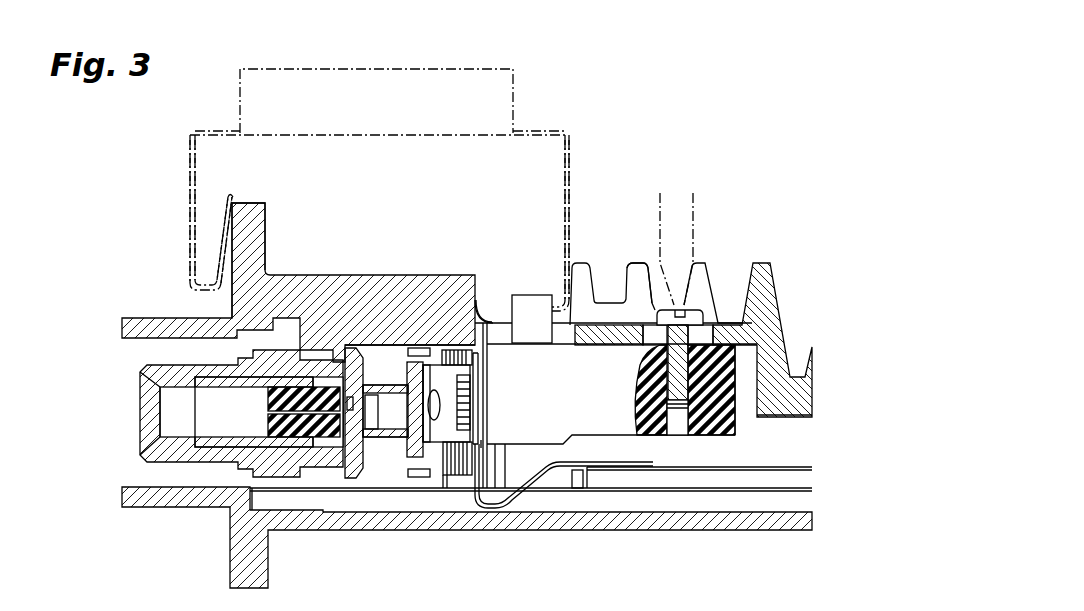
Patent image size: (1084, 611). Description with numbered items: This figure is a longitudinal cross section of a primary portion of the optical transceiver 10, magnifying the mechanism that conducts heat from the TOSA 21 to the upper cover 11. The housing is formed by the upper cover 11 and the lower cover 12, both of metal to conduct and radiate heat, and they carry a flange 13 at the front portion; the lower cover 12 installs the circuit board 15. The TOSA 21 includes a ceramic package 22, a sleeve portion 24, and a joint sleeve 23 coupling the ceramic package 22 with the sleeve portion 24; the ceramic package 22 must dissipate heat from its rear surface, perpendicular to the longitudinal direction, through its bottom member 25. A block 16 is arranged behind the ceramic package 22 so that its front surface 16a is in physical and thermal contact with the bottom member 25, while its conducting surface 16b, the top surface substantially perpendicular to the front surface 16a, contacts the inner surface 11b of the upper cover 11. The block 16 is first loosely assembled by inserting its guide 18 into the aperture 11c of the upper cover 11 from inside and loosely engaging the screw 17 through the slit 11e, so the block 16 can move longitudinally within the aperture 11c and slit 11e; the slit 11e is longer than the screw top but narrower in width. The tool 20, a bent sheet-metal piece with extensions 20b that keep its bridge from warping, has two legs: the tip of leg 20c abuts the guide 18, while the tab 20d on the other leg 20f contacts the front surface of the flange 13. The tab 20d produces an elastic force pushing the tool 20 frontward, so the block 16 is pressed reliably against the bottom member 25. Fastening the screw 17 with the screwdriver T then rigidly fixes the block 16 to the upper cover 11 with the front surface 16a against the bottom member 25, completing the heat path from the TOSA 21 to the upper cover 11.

The optical transceiver 10 is at (612, 200).
The upper cover 11 is at (337, 275).
The inner surface 11b is at (612, 347).
The aperture 11c is at (492, 302).
The slit 11e is at (640, 300).
The lower cover 12 is at (323, 523).
The flange 13 is at (262, 228).
The circuit board 15 is at (687, 477).
The block 16 is at (588, 423).
The front surface 16a is at (478, 433).
The conducting surface 16b is at (583, 335).
The screw 17 is at (715, 272).
The guide 18 is at (532, 295).
The tool 20 is at (516, 122).
The extensions 20b is at (256, 101).
The leg 20c is at (560, 206).
The tab 20d is at (238, 198).
The leg 20f is at (190, 218).
The TOSA 21 is at (383, 365).
The ceramic package 22 is at (450, 478).
The joint sleeve 23 is at (358, 460).
The sleeve portion 24 is at (220, 460).
The bottom member 25 is at (478, 399).
The screwdriver T is at (693, 210).